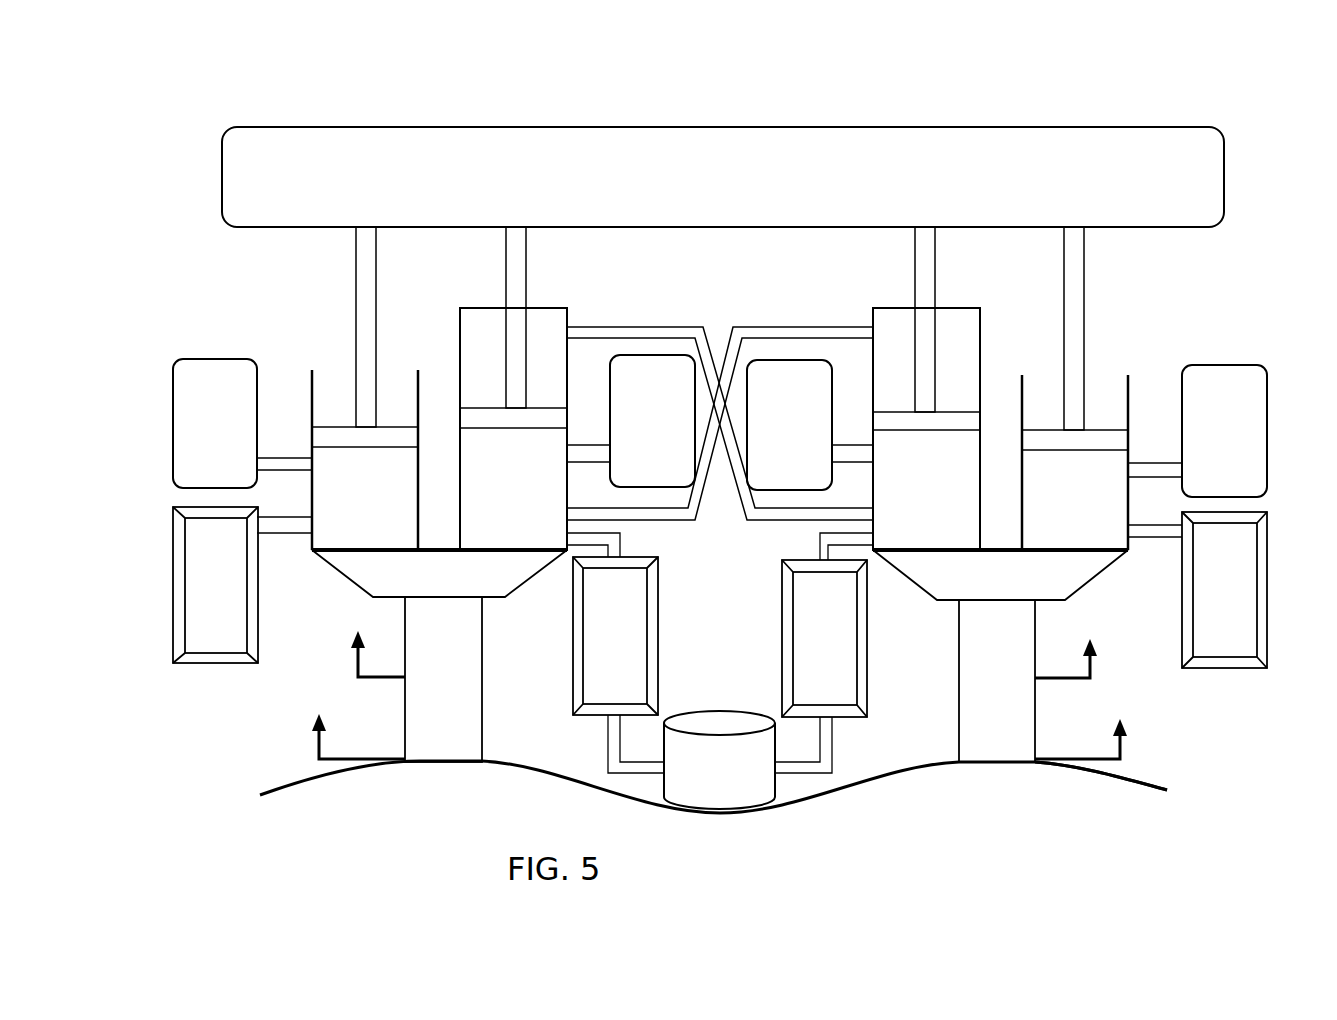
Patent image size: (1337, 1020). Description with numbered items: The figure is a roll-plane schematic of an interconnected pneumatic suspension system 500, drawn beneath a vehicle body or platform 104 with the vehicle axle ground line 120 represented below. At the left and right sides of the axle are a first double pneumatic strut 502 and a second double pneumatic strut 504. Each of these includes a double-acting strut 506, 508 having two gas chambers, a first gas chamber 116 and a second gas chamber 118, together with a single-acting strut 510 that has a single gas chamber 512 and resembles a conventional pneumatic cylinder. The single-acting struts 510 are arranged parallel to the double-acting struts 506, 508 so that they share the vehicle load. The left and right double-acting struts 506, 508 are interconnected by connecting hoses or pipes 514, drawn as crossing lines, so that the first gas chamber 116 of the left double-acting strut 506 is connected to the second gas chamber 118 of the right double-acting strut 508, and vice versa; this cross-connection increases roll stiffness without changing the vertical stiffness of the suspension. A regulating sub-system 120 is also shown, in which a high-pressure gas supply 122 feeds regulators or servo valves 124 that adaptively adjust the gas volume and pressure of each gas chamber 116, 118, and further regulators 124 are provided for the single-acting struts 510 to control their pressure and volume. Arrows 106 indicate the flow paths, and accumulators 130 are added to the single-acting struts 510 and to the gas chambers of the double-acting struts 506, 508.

The platform / top plate 104 is at (678, 130).
The fluid flow direction 106 is at (253, 723).
The first gas chamber 116 is at (477, 337).
The second gas chamber 118 is at (494, 485).
The regulating sub-system 120 is at (942, 792).
The high-pressure gas supply 122 is at (740, 779).
The regulator/servo valve 124 is at (195, 605).
The accumulator 130 is at (192, 433).
The interconnected pneumatic suspension system 500 is at (1112, 817).
The first double pneumatic strut 502 is at (252, 282).
The second double pneumatic strut 504 is at (1163, 308).
The left double-acting strut 506 is at (545, 307).
The right double-acting strut 508 is at (960, 310).
The single-acting strut 510 is at (312, 393).
The single gas chamber 512 is at (342, 499).
The connecting hoses/pipes 514 is at (767, 327).